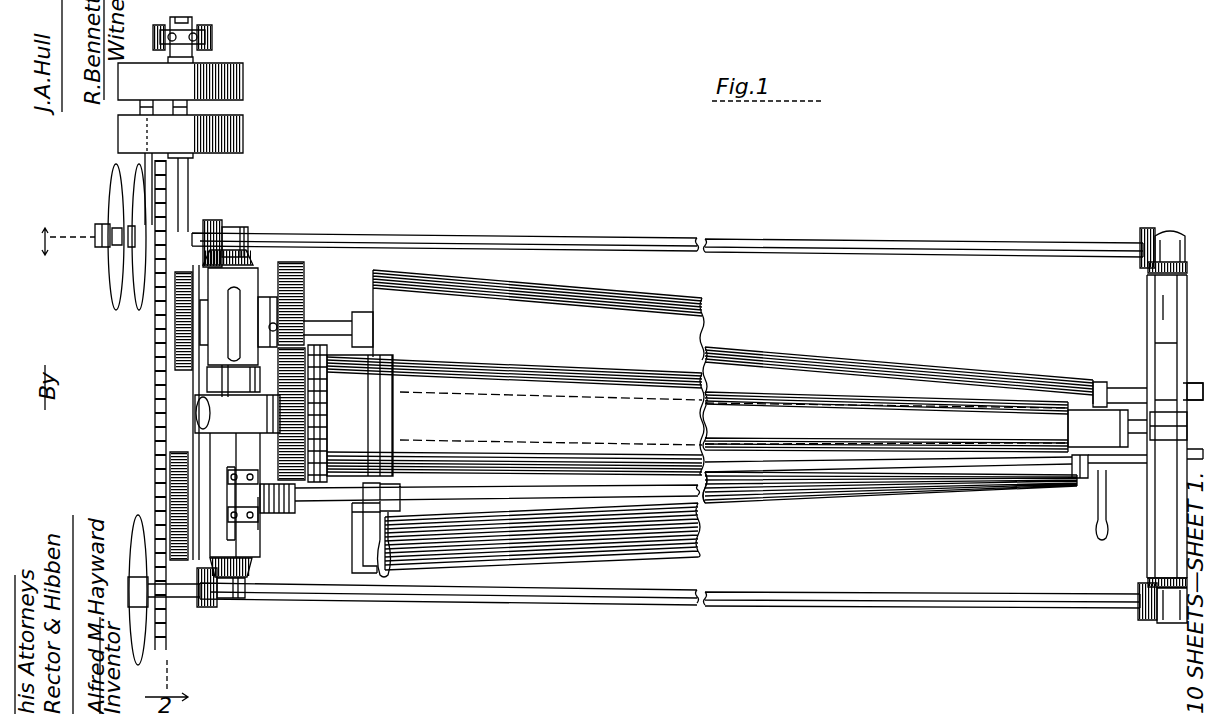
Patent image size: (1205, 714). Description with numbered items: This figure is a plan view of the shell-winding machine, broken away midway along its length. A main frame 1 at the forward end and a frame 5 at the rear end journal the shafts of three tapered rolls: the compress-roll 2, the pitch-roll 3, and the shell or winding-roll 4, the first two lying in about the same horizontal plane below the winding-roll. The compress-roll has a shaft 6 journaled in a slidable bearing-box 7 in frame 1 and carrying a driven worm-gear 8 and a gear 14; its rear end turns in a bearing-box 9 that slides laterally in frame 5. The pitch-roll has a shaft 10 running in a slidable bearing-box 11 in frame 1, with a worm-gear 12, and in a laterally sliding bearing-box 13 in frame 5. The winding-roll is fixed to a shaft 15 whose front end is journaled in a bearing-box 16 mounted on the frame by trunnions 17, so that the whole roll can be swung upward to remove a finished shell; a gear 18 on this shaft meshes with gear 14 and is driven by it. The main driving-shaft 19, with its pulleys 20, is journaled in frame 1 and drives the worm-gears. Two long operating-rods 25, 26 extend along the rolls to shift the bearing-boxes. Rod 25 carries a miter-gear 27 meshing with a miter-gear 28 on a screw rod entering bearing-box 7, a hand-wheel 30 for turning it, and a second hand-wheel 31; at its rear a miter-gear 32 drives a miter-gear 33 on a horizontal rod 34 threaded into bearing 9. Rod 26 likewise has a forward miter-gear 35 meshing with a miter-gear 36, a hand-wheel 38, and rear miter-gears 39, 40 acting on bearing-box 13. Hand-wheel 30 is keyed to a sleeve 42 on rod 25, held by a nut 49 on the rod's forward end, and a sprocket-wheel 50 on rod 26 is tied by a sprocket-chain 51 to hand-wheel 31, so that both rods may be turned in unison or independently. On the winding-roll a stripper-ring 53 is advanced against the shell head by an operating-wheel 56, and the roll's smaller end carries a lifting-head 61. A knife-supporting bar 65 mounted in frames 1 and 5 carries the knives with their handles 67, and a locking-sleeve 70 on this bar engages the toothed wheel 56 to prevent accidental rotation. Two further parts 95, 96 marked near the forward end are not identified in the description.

The main frame 1 is at (243, 548).
The compress-roll 2 is at (733, 337).
The pitch-roll 3 is at (731, 521).
The shell or winding-roll 4 is at (697, 416).
The frame 5 is at (1150, 546).
The shaft 6 is at (320, 320).
The slidable bearing-box 7 is at (270, 300).
The worm-gear 8 is at (175, 356).
The bearing-box 9 is at (1160, 371).
The shaft 10 is at (343, 506).
The slidable bearing-box 11 is at (258, 528).
The worm-gear 12 is at (170, 471).
The bearing-box 13 is at (1090, 478).
The gear 14 is at (300, 287).
The shaft 15 is at (56, 239).
The bearing-box 16 is at (237, 412).
The trunnions 17 is at (228, 366).
The gear 18 is at (306, 413).
The main driving-shaft 19 is at (187, 208).
The pulleys 20 is at (243, 119).
The operating-rod 25 is at (463, 231).
The operating-rod 26 is at (460, 606).
The miter-gear 27 is at (218, 227).
The miter-gear 28 is at (250, 233).
The hand-wheel 30 is at (112, 292).
The hand-wheel 31 is at (137, 306).
The miter-gear 32 is at (1146, 230).
The miter-gear 33 is at (1147, 271).
The horizontal rod 34 is at (1163, 306).
The miter-gear 35 is at (210, 607).
The miter-gear 36 is at (244, 602).
The hand-wheel 38 is at (142, 645).
The miter-gear 39 is at (1140, 617).
The miter-gear 40 is at (1167, 595).
The sleeve 42 is at (117, 252).
The nut 49 is at (100, 250).
The sprocket-wheel 50 is at (166, 602).
The sprocket-chain 51 is at (154, 450).
The stripper-ring 53 is at (368, 449).
The operating-wheel 56 is at (325, 387).
The lifting-head 61 is at (1107, 428).
The knife-supporting rod or bar 65 is at (741, 474).
The handle 67 is at (382, 580).
The locking-sleeve 70 is at (282, 517).
The hub 95 is at (132, 232).
The rod 96 is at (150, 198).